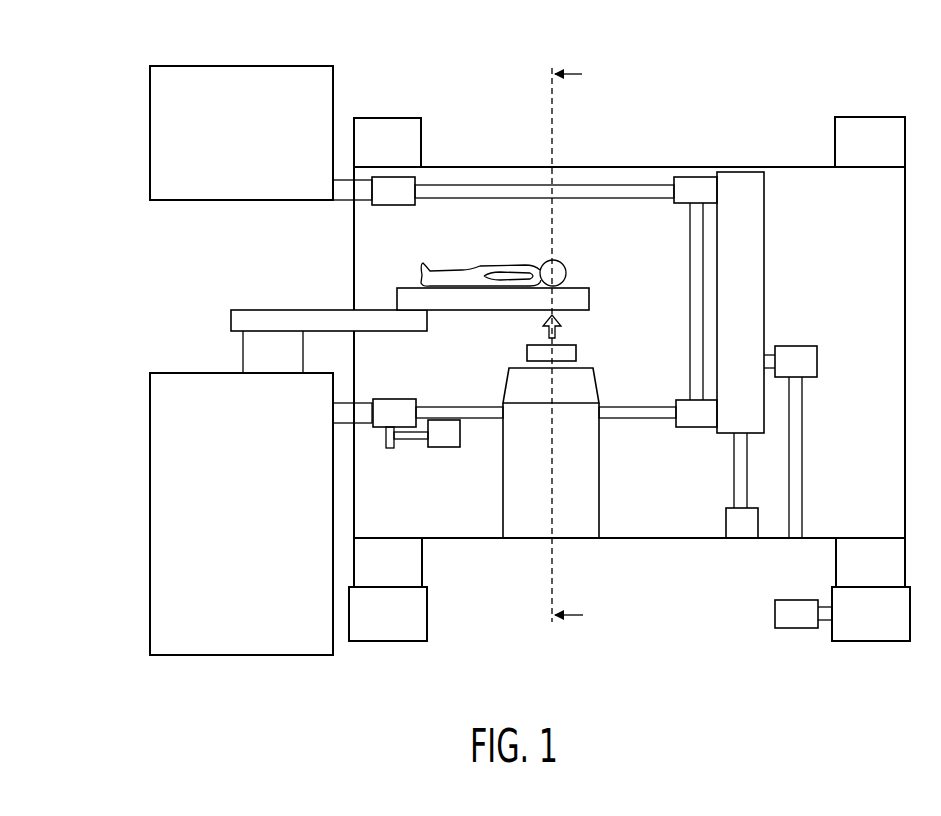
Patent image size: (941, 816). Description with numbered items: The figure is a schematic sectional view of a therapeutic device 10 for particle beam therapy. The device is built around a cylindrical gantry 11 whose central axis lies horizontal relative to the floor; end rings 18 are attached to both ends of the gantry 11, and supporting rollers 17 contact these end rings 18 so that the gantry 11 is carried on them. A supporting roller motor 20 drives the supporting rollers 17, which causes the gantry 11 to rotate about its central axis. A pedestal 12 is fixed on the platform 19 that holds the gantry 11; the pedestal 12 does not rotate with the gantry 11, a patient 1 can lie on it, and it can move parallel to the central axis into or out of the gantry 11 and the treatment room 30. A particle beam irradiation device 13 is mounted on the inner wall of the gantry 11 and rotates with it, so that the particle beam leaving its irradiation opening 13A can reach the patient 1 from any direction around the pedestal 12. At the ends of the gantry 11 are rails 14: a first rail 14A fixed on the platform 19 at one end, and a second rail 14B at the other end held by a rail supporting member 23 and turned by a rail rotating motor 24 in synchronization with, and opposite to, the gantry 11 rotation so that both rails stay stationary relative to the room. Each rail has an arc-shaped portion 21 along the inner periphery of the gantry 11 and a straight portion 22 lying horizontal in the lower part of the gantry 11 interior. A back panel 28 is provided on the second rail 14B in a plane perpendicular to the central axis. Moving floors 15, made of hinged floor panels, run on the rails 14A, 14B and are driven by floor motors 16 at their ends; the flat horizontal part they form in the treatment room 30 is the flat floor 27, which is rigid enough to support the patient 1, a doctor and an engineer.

The patient 1 is at (512, 262).
The therapeutic device 10 is at (350, 62).
The gantry 11 is at (613, 167).
The pedestal 12 is at (286, 310).
The particle beam irradiation device 13 is at (600, 508).
The irradiation opening 13A is at (527, 353).
The rail 14 is at (525, 302).
The first rail 14A is at (402, 205).
The second rail 14B is at (682, 205).
The moving floor 15 is at (527, 185).
The floor motor 16 is at (442, 448).
The supporting roller 17 is at (427, 613).
The end ring 18 is at (404, 117).
The platform 19 is at (167, 120).
The supporting roller motor 20 is at (775, 617).
The arc-shaped portion 21 is at (544, 158).
The straight portion 22 is at (550, 439).
The rail supporting member 23 is at (740, 538).
The rail rotating motor 24 is at (800, 346).
The flat floor 27 is at (647, 418).
The back panel 28 is at (692, 272).
The treatment room 30 is at (633, 304).